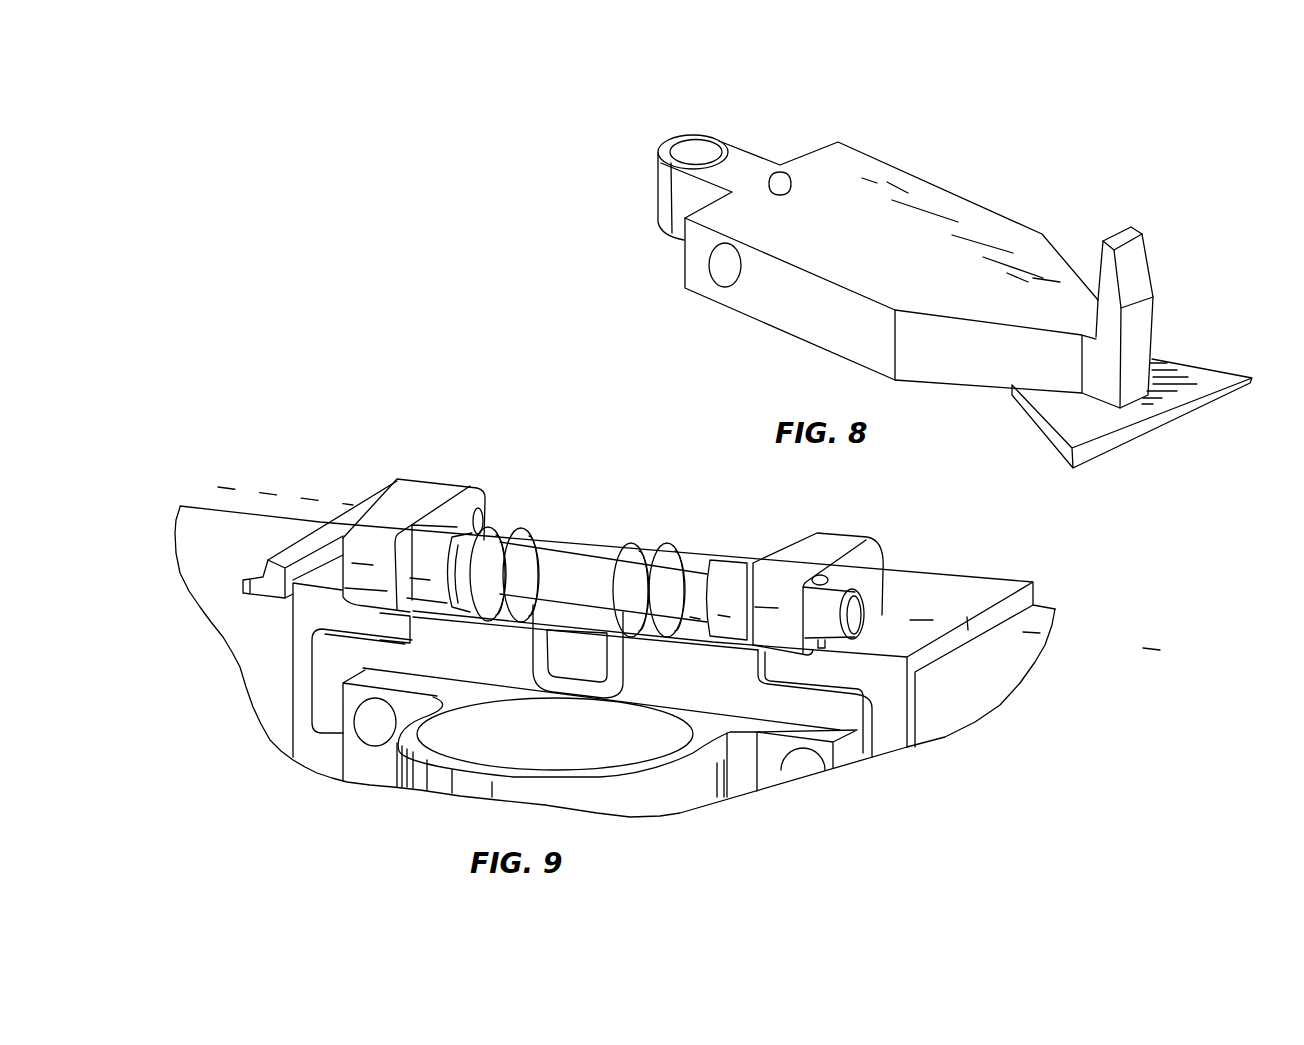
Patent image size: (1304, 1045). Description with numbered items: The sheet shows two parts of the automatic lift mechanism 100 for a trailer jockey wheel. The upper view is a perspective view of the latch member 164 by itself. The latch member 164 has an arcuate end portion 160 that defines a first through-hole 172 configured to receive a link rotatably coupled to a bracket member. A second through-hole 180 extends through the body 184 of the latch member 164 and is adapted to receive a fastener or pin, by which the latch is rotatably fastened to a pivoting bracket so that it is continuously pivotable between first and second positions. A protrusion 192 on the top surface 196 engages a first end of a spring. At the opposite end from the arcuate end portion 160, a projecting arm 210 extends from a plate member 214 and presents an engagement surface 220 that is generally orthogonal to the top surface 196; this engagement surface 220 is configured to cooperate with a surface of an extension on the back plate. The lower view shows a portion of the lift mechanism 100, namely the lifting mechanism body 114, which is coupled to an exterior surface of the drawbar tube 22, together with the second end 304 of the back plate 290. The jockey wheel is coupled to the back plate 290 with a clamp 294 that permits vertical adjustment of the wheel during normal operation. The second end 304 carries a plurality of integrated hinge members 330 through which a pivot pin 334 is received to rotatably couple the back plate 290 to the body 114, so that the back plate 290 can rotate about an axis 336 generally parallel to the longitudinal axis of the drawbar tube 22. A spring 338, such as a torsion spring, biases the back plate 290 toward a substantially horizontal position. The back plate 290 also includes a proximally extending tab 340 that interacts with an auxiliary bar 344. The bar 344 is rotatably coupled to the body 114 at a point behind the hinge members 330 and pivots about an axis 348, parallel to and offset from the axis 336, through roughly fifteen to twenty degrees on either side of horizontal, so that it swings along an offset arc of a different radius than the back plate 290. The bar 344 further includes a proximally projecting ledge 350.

In FIG. 8, the latch member 164 is at (1150, 84).
In FIG. 8, the arcuate end portion 160 is at (673, 192).
In FIG. 8, the first through-hole 172 is at (698, 150).
In FIG. 8, the protrusion 192 is at (780, 176).
In FIG. 8, the top surface 196 is at (936, 199).
In FIG. 8, the second through-hole 180 is at (725, 270).
In FIG. 8, the body 184 is at (813, 315).
In FIG. 8, the engagement surface 220 is at (1098, 262).
In FIG. 8, the projecting arm 210 is at (1144, 336).
In FIG. 8, the plate member 214 is at (1193, 382).
In FIG. 9, the automatic lift mechanism 100 is at (247, 396).
In FIG. 9, the drawbar tube 22 is at (1010, 673).
In FIG. 9, the lifting mechanism body 114 is at (998, 590).
In FIG. 9, the axis 336 is at (1097, 640).
In FIG. 9, the clamp 294 is at (675, 798).
In FIG. 9, the proximally extending tab 340 is at (327, 712).
In FIG. 9, the back plate 290 is at (838, 713).
In FIG. 9, the axis 348 is at (272, 493).
In FIG. 9, the proximally projecting ledge 350 is at (250, 590).
In FIG. 9, the auxiliary bar 344 is at (395, 479).
In FIG. 9, the second end 304 is at (567, 509).
In FIG. 9, the hinge members 330 is at (430, 552).
In FIG. 9, the pivot pin 334 is at (577, 567).
In FIG. 9, the spring 338 is at (668, 553).